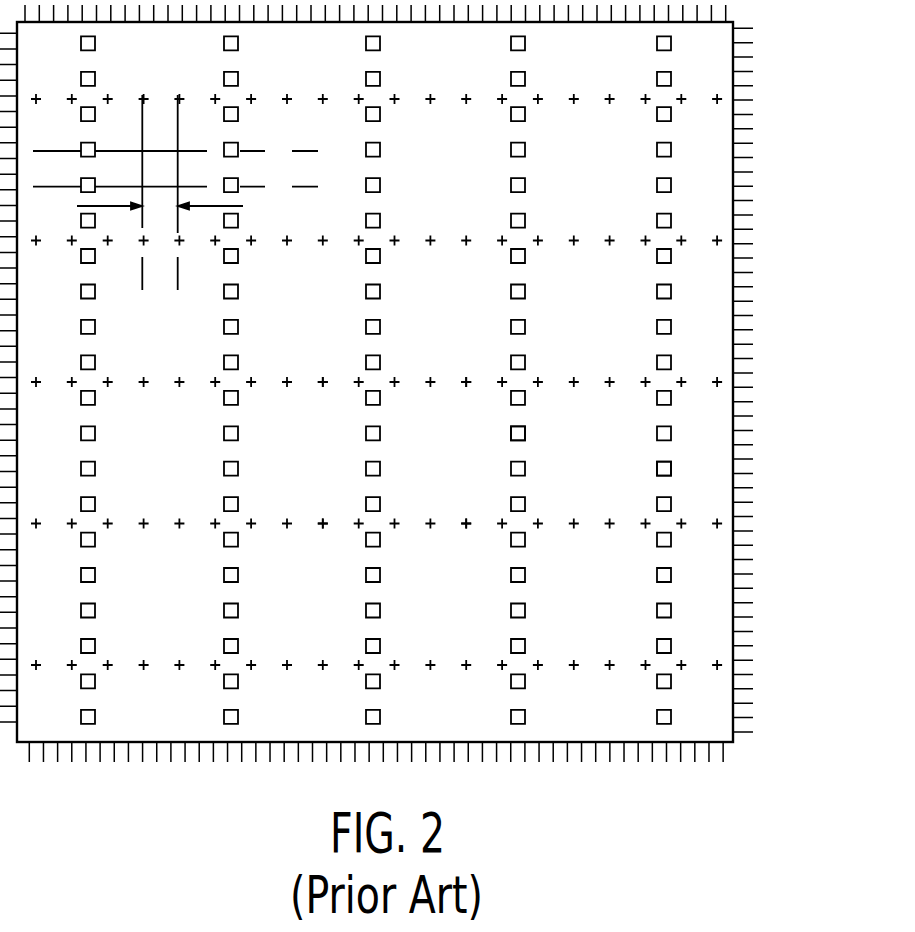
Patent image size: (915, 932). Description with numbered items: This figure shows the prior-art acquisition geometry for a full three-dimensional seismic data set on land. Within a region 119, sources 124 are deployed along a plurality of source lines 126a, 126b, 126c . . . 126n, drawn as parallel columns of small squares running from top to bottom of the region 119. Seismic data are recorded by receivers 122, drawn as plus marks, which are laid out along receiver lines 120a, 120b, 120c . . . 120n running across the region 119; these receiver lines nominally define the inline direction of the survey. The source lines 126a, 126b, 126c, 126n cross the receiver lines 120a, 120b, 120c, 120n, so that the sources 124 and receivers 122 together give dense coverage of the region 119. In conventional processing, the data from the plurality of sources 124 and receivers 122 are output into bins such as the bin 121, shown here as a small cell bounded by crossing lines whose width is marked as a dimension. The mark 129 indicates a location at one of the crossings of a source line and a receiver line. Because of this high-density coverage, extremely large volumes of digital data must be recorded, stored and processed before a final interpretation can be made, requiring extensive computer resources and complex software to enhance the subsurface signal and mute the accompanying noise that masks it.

The region 119 is at (420, 383).
The receiver line 120a is at (376, 637).
The receiver line 120b is at (376, 547).
The receiver line 120c is at (376, 353).
The receiver line 120n is at (376, 120).
The bin 121 is at (196, 142).
The receiver 122 is at (359, 425).
The source 124 is at (591, 449).
The source line 126a is at (615, 376).
The source line 126b is at (471, 376).
The source line 126c is at (324, 376).
The source line 126n is at (134, 376).
The vacant pad site 129 is at (419, 215).